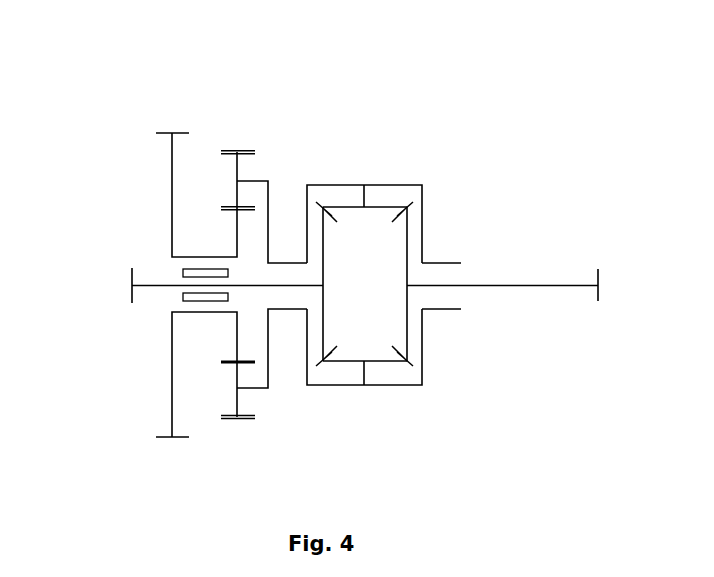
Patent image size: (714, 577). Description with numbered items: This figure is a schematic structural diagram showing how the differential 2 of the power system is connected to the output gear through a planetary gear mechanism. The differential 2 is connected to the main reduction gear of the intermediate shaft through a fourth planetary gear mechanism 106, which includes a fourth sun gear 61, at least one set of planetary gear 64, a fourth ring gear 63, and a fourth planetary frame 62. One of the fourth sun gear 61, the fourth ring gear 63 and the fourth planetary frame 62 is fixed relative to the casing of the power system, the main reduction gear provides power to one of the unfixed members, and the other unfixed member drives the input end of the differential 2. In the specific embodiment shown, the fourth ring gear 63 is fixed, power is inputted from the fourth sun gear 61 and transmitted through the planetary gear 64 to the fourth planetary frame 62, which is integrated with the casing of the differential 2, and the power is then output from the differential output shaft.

The differential 2 is at (365, 232).
The fourth sun gear 61 is at (238, 337).
The fourth planetary frame 62 is at (253, 388).
The fourth ring gear 63 is at (243, 420).
The planetary gear 64 is at (238, 174).
The fourth planetary gear mechanism 106 is at (218, 192).